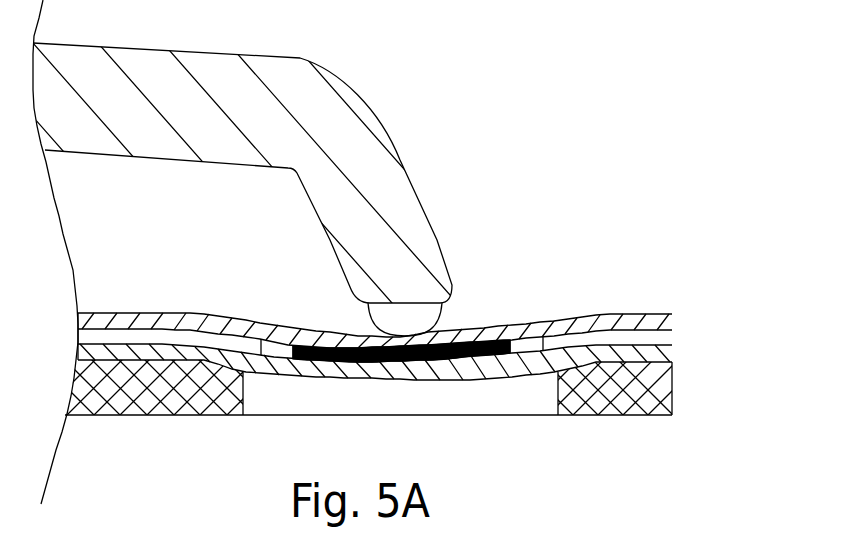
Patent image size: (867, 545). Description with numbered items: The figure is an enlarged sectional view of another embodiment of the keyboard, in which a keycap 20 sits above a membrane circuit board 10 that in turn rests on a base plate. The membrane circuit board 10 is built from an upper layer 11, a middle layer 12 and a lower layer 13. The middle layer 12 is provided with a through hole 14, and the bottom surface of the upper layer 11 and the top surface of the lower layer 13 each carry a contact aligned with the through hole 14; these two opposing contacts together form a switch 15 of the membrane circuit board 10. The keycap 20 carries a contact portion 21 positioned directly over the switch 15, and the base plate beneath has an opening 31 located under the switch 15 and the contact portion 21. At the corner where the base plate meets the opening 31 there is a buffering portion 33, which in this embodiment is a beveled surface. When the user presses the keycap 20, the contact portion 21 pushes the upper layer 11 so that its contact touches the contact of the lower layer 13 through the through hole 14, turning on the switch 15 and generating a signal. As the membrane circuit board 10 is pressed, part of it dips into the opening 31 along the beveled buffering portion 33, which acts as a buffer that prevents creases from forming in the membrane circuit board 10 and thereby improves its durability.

The membrane circuit board 10 is at (411, 346).
The upper layer 11 is at (672, 323).
The middle layer 12 is at (672, 338).
The lower layer 13 is at (672, 355).
The through hole 14 is at (523, 350).
The switch 15 is at (333, 327).
The keycap 20 is at (357, 112).
The contact portion 21 is at (427, 308).
The opening 31 is at (407, 395).
The buffering portion 33 is at (227, 367).